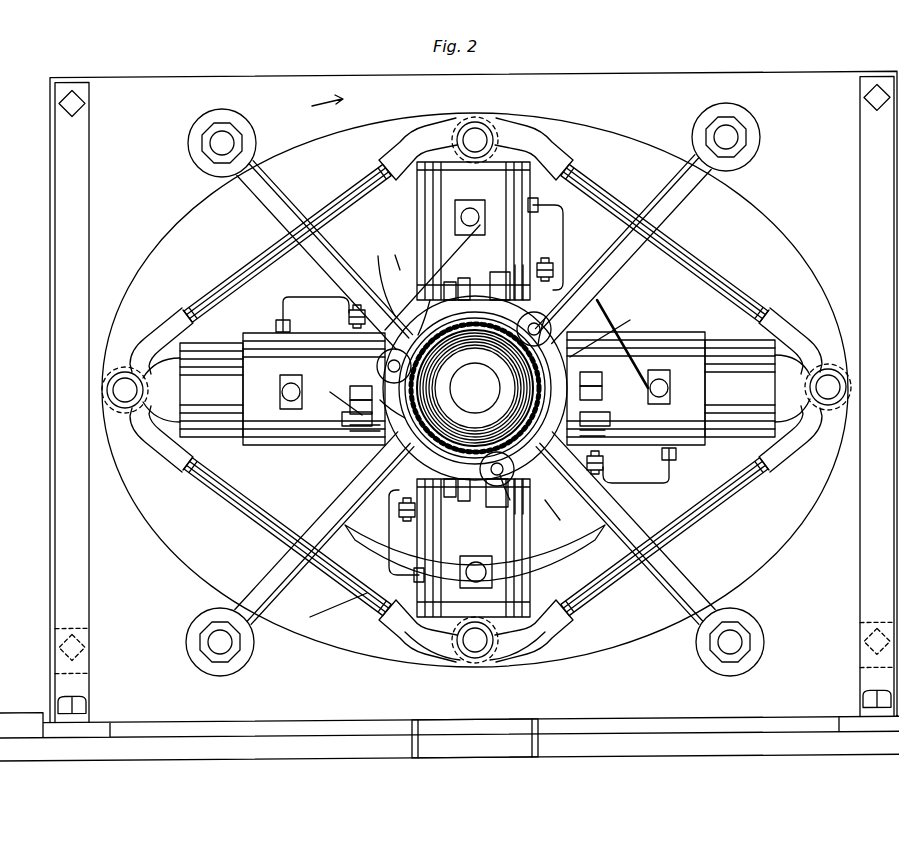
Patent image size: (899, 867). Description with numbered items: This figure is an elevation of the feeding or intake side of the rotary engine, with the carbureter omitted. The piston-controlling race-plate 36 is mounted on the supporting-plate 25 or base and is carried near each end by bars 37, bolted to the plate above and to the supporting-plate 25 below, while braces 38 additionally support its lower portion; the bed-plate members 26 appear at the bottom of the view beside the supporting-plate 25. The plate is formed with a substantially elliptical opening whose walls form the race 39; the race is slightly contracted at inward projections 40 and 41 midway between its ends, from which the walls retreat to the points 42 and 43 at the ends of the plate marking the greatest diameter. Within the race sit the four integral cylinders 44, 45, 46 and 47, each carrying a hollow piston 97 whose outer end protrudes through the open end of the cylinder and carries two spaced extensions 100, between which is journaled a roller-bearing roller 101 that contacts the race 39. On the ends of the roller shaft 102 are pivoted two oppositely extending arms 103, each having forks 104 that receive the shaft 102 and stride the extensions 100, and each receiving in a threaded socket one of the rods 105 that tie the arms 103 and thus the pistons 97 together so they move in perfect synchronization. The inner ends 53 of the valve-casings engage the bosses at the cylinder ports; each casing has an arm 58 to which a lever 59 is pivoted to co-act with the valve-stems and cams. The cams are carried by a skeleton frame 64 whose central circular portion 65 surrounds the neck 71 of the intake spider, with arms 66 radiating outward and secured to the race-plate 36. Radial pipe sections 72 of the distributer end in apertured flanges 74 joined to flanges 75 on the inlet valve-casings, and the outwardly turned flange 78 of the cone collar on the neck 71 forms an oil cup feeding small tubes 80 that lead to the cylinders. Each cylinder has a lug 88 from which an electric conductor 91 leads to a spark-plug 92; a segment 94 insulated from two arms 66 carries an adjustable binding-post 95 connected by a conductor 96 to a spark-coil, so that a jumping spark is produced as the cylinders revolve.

The supporting-plate 25 is at (475, 738).
The bracket 26 is at (430, 626).
The piston-controlling race-plate 36 is at (258, 76).
The bars 37 is at (90, 163).
The braces 38 is at (88, 629).
The race 39 is at (160, 251).
The inward projection 40 is at (485, 666).
The inward projection 41 is at (482, 126).
The point at end of race 42 is at (102, 391).
The point at end of race 43 is at (852, 389).
The cylinder 44 is at (428, 201).
The cylinder 45 is at (636, 388).
The cylinder 46 is at (473, 548).
The cylinder 47 is at (314, 389).
The inner ends of valve-casings 53 is at (460, 379).
The arm 58 is at (318, 428).
The lever 59 is at (465, 277).
The skeleton frame 64 is at (380, 278).
The central circular portion 65 is at (624, 344).
The arms 66 is at (395, 251).
The neck 71 is at (455, 422).
The radial pipe sections 72 is at (482, 377).
The apertured flange 74 is at (525, 271).
The flange 75 is at (325, 373).
The outwardly turned flange 78 is at (466, 330).
The small tubes 80 is at (320, 319).
The lug 88 is at (470, 209).
The electric conductor 91 is at (477, 378).
The spark-plug 92 is at (556, 262).
The segment 94 is at (530, 546).
The binding-post 95 is at (476, 583).
The conductor 96 is at (338, 612).
The pistons 97 is at (477, 388).
The extensions 100 is at (488, 591).
The roller-bearing roller 101 is at (462, 124).
The shaft 102 is at (482, 141).
The arms 103 is at (400, 131).
The forks 104 is at (475, 121).
The rods 105 is at (270, 266).